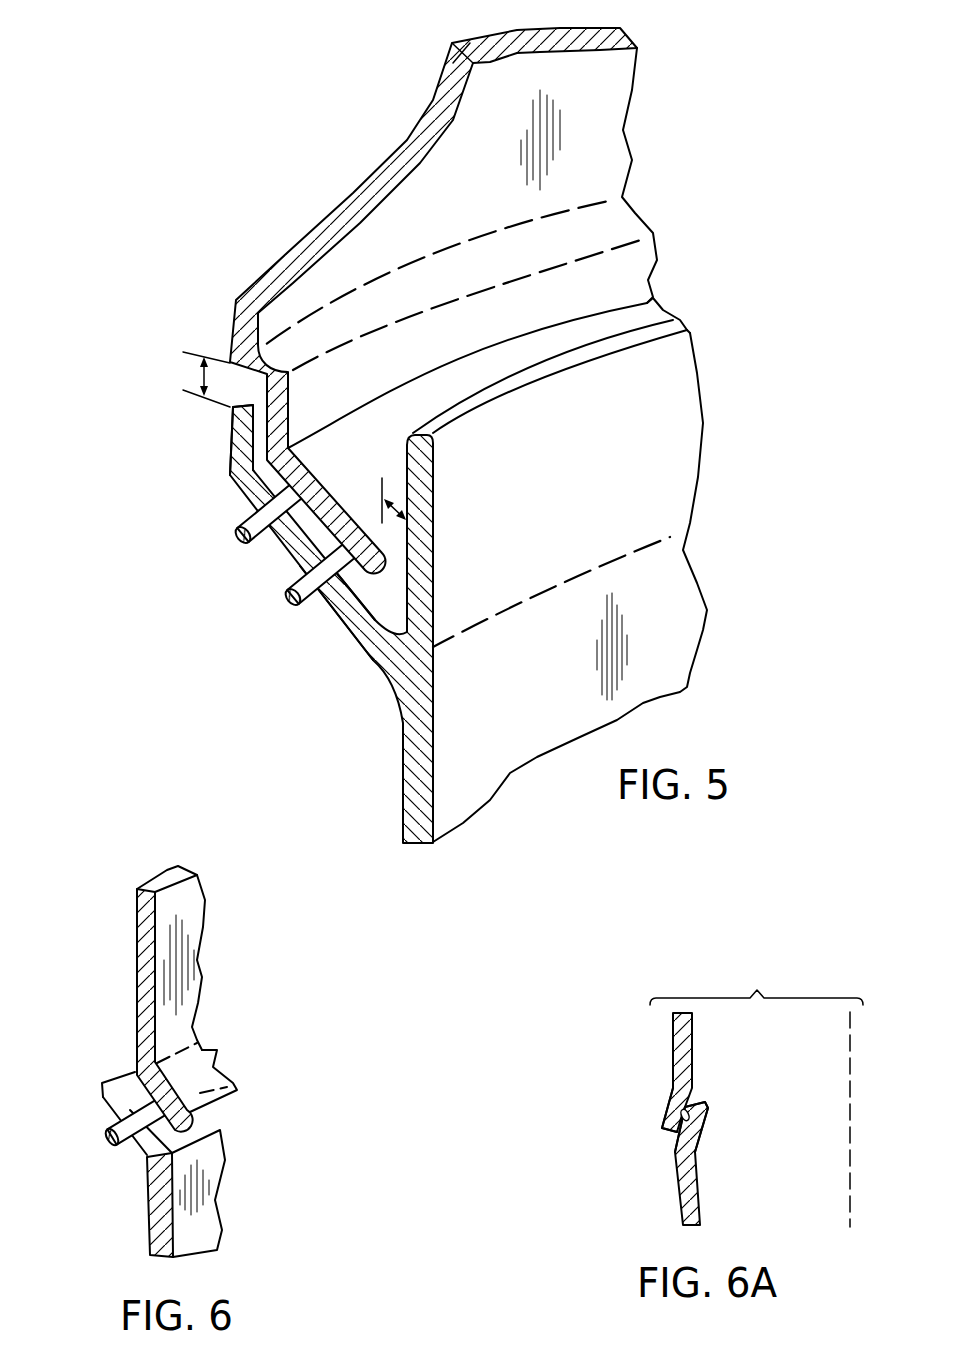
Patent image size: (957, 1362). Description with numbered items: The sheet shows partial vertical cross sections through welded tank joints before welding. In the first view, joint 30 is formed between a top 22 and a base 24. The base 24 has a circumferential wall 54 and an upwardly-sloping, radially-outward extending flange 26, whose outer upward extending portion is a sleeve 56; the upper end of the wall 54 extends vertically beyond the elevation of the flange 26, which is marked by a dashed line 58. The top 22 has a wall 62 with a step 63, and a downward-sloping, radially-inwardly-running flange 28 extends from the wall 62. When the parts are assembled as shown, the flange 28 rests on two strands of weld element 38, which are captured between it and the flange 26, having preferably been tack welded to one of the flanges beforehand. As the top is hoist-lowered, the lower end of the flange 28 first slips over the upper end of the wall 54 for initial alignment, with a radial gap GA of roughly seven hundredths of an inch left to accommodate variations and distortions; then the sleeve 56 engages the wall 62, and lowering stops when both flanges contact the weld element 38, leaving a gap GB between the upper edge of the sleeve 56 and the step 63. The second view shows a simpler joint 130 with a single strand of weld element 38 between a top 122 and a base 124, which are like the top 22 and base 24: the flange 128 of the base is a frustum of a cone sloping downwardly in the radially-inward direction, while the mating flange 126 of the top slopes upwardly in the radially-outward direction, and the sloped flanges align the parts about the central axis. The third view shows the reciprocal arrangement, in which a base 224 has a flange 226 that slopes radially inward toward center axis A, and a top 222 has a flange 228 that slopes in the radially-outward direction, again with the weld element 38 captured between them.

In FIG. 5, the top 22 is at (620, 130).
In FIG. 5, the base 24 is at (690, 617).
In FIG. 5, the flange 26 is at (353, 623).
In FIG. 5, the flange 28 is at (650, 313).
In FIG. 5, the joint 30 is at (178, 553).
In FIG. 5, the weld element 38 is at (240, 547).
In FIG. 6, the weld element 38 is at (112, 1148).
In FIG. 6A, the weld element 38 is at (688, 1109).
In FIG. 5, the circumferential wall 54 is at (698, 422).
In FIG. 5, the sleeve 56 is at (233, 455).
In FIG. 5, the dashed line 58 is at (663, 538).
In FIG. 5, the wall 62 is at (647, 257).
In FIG. 5, the step 63 is at (635, 220).
In FIG. 5, the radial gap GA is at (384, 498).
In FIG. 5, the gap GB is at (198, 378).
In FIG. 6, the top 122 is at (137, 935).
In FIG. 6, the base 124 is at (157, 1205).
In FIG. 6, the mating flange 126 is at (127, 1078).
In FIG. 6, the flange 128 is at (210, 1063).
In FIG. 6, the joint 130 is at (75, 1123).
In FIG. 6A, the top 222 is at (672, 1043).
In FIG. 6A, the base 224 is at (678, 1180).
In FIG. 6A, the flange 226 is at (705, 1127).
In FIG. 6A, the flange 228 is at (670, 1107).
In FIG. 6A, the center axis A is at (850, 1195).